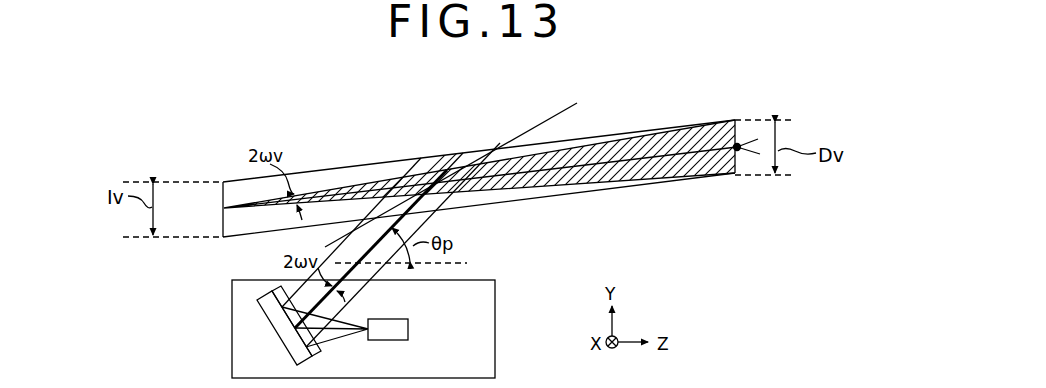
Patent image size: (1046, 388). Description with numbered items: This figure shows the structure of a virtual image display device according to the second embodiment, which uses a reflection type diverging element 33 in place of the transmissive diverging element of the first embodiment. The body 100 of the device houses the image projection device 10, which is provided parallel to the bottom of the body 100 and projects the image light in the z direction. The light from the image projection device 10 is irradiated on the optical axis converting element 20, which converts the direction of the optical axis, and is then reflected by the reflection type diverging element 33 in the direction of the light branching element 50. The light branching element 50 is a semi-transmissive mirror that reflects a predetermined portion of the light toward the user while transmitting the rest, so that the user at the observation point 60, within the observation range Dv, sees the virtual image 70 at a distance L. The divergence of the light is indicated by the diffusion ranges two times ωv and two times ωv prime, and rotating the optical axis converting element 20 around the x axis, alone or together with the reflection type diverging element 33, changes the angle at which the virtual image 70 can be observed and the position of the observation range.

The image projection device 10 is at (409, 328).
The optical axis converting element 20 is at (317, 355).
The reflection type diverging element 33 is at (303, 358).
The light branching element 50 is at (520, 137).
The observation point 60 is at (740, 150).
The virtual image 70 is at (223, 190).
The body 100 is at (247, 325).